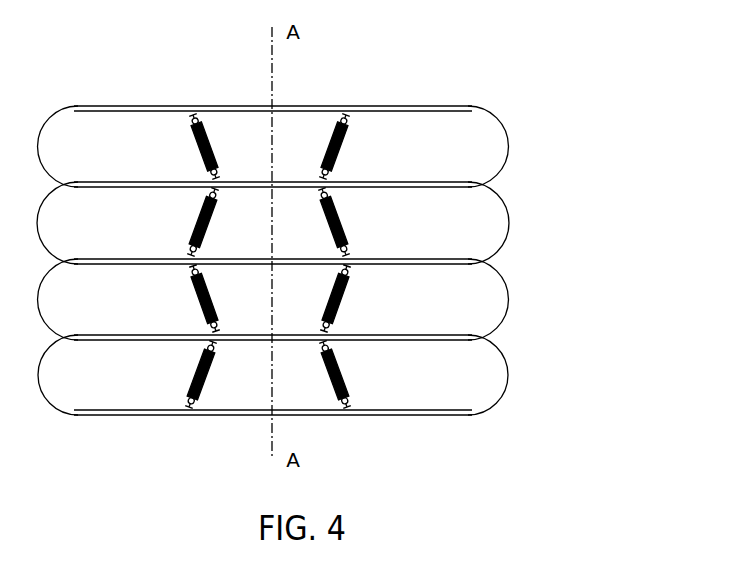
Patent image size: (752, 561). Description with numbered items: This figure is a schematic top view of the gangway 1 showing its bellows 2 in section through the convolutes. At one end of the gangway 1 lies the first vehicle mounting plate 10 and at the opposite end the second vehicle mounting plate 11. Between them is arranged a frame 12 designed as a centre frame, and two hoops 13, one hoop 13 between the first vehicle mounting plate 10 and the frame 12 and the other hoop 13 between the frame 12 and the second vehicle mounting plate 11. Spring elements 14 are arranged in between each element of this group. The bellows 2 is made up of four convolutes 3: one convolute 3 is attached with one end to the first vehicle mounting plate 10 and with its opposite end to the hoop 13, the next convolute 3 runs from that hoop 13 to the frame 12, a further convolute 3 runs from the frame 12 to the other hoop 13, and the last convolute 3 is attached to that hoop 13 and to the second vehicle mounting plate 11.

The gangway 1 is at (570, 99).
The bellows 2 is at (623, 253).
The convolute 3 is at (507, 140).
The first vehicle mounting plate 10 is at (441, 112).
The second vehicle mounting plate 11 is at (423, 416).
The frame 12 is at (442, 265).
The hoop 13 is at (441, 188).
The spring element 14 is at (196, 135).